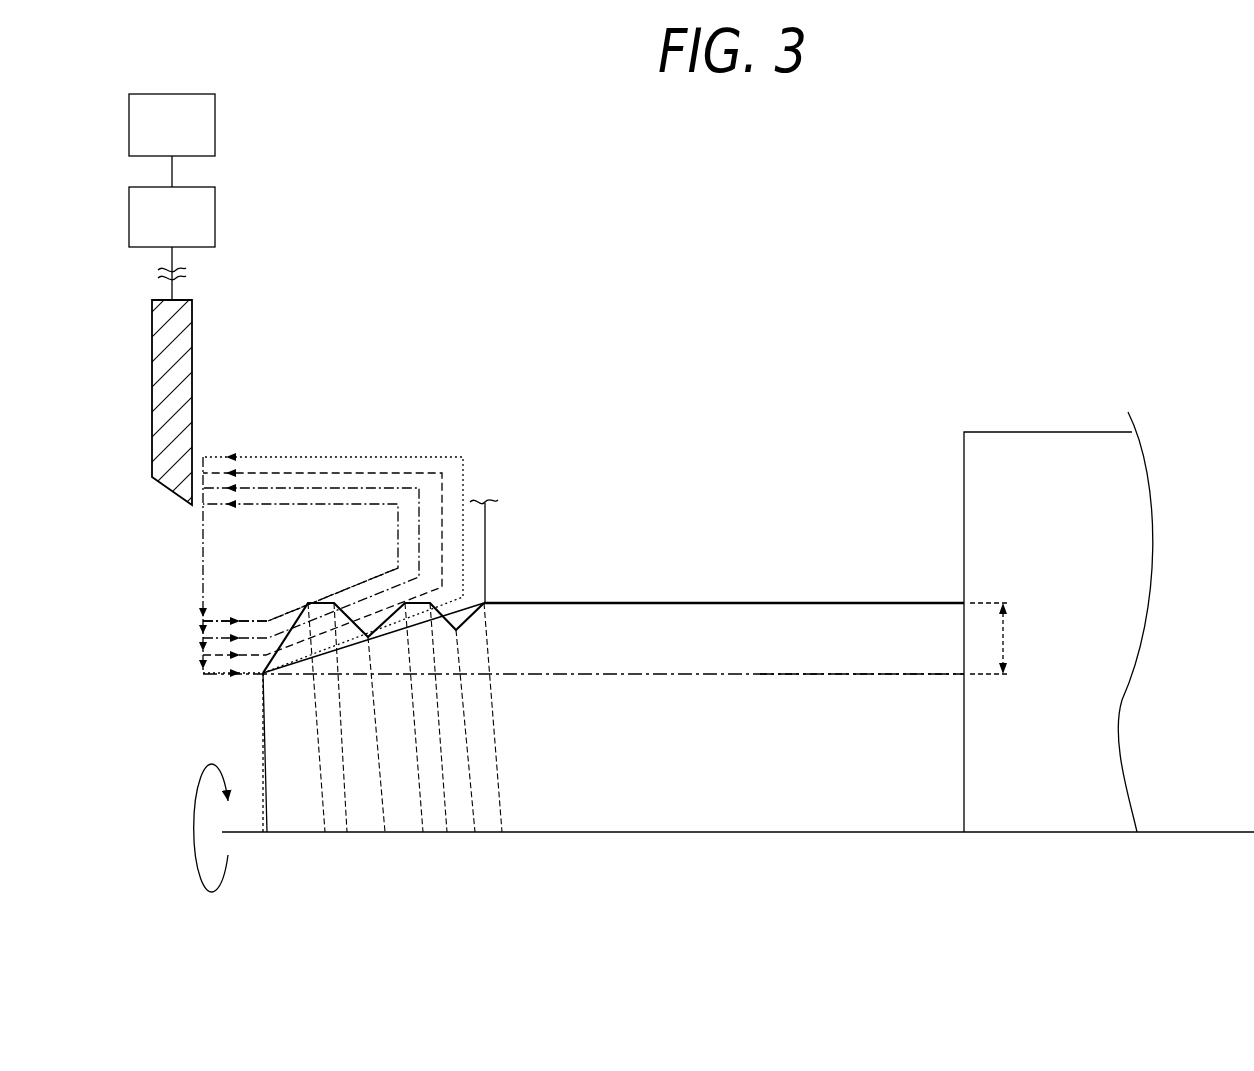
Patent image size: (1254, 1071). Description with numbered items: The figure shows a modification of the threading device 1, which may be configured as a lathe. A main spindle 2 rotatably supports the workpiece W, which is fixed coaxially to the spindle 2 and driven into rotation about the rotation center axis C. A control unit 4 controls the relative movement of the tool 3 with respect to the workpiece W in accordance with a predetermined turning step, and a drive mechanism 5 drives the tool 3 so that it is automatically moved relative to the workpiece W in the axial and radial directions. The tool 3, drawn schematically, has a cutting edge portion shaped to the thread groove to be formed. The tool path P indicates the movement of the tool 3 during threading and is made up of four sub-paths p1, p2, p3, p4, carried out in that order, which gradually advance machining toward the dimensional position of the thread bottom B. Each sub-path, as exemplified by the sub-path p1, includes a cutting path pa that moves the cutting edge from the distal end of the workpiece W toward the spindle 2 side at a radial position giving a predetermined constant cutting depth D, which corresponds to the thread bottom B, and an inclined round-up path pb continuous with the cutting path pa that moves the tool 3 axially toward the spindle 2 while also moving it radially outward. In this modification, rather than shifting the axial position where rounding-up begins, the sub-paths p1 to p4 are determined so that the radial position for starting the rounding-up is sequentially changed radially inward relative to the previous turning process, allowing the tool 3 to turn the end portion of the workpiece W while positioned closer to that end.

The threading device 1 is at (1057, 341).
The main spindle 2 is at (1030, 822).
The tool 3 is at (152, 367).
The control unit 4 is at (129, 121).
The drive mechanism 5 is at (129, 212).
The workpiece W is at (644, 602).
The thread bottom B is at (870, 675).
The cutting depth D is at (1000, 638).
The rotation center axis C is at (1192, 832).
The tool path P is at (352, 531).
The sub-path p1 is at (258, 505).
The sub-path p2 is at (304, 489).
The sub-path p3 is at (356, 474).
The sub-path p4 is at (412, 458).
The cutting path pa is at (217, 620).
The inclined round-up path pb is at (355, 585).